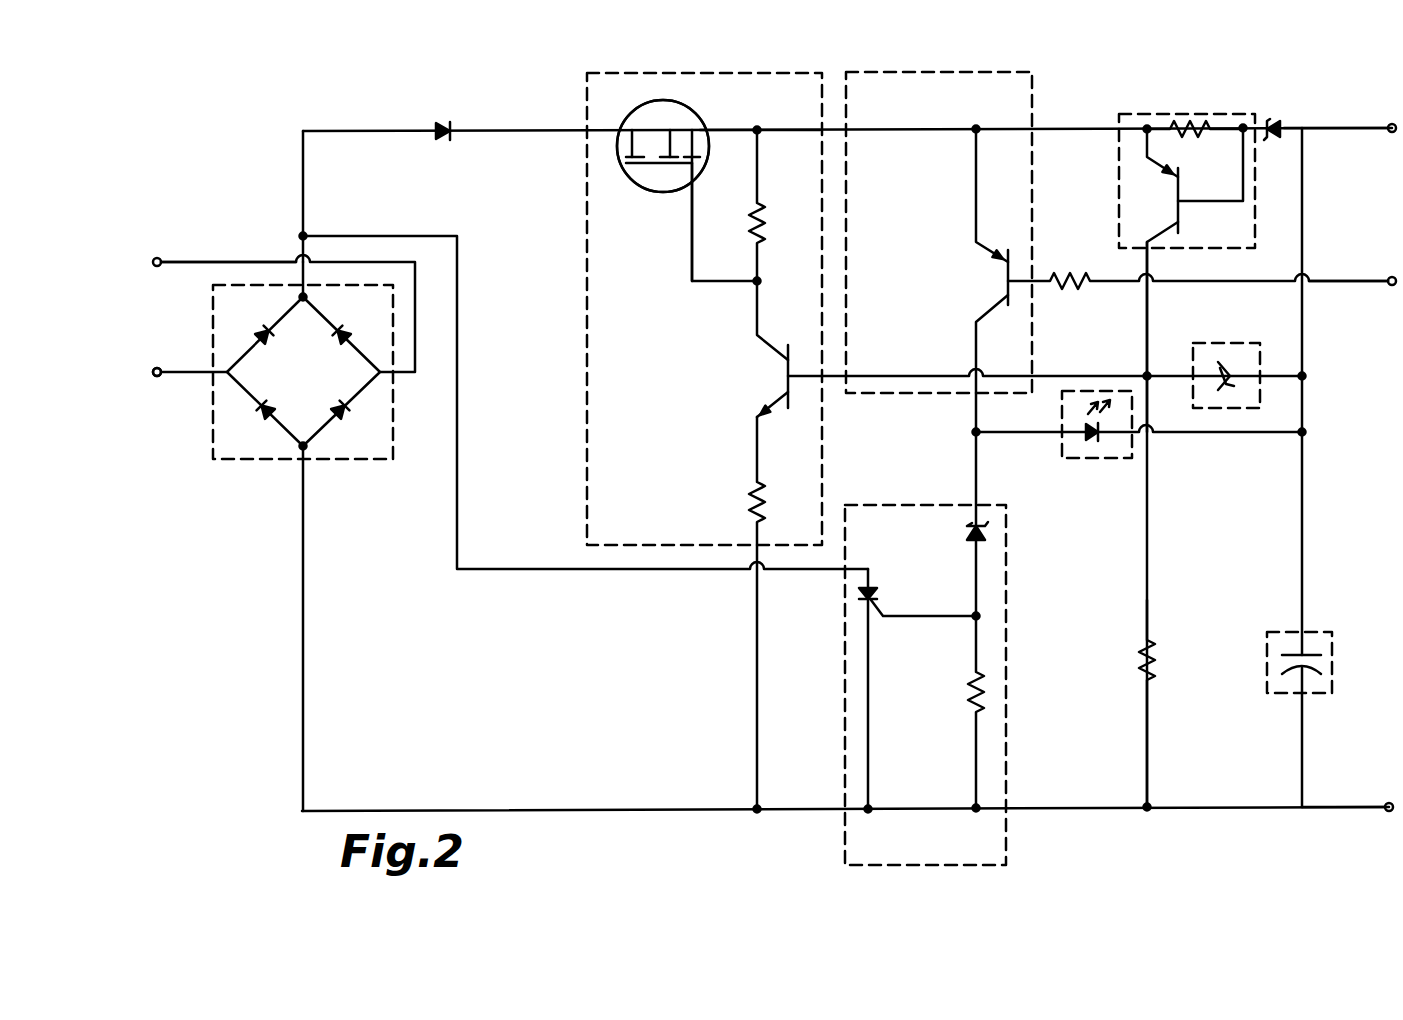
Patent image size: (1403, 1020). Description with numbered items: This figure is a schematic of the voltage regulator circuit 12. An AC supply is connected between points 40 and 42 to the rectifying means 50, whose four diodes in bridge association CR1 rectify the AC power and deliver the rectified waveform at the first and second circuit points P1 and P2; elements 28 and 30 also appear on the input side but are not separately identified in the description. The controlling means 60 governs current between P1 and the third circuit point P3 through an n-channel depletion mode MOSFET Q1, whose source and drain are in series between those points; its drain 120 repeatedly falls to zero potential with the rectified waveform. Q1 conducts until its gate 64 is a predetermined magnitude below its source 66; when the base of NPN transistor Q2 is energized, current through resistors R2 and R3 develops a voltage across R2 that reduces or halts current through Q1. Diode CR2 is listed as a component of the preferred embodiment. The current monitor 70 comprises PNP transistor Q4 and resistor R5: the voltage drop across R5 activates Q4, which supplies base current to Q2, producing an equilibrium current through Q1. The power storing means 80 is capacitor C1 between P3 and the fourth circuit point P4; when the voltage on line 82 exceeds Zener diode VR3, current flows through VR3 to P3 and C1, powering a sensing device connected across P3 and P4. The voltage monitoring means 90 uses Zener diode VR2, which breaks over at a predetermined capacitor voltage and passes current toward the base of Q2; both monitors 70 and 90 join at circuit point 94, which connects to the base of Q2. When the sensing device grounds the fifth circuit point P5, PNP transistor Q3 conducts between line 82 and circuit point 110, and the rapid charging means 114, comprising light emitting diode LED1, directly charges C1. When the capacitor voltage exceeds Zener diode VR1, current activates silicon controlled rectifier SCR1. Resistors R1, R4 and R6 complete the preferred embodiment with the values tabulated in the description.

The circuit 12 is at (272, 692).
The input lead 28 is at (212, 262).
The input terminal 30 is at (215, 372).
The point 40 is at (157, 258).
The point 42 is at (157, 380).
The rectifying means 50 is at (393, 457).
The controlling means 60 is at (587, 307).
The gate 64 is at (694, 218).
The source 66 is at (735, 128).
The current monitor 70 is at (1147, 113).
The power storing means 80 is at (1332, 680).
The line 82 is at (1080, 130).
The voltage monitoring means 90 is at (1262, 350).
The circuit point 94 is at (1146, 374).
The circuit point 110 is at (975, 435).
The rapid charging means 114 is at (1106, 458).
The drain 120 is at (613, 130).
The bridge diodes CR1 is at (303, 356).
The diode CR2 is at (453, 138).
The MOSFET Q1 is at (661, 192).
The NPN transistor Q2 is at (765, 350).
The PNP transistor Q3 is at (1020, 305).
The PNP transistor Q4 is at (1183, 222).
The resistor R1 is at (985, 690).
The resistor R2 is at (763, 222).
The resistor R3 is at (750, 508).
The resistor R4 is at (1150, 658).
The resistor R5 is at (1196, 135).
The resistor R6 is at (1076, 280).
The Zener diode VR1 is at (985, 530).
The Zener diode VR2 is at (1220, 370).
The Zener diode VR3 is at (1270, 115).
The light emitting diode LED1 is at (1085, 440).
The silicon controlled rectifier SCR1 is at (940, 560).
The capacitor C1 is at (1308, 650).
The first circuit point P1 is at (305, 244).
The second circuit point P2 is at (306, 496).
The third circuit point P3 is at (1390, 134).
The fourth circuit point P4 is at (1388, 812).
The fifth circuit point P5 is at (1390, 287).